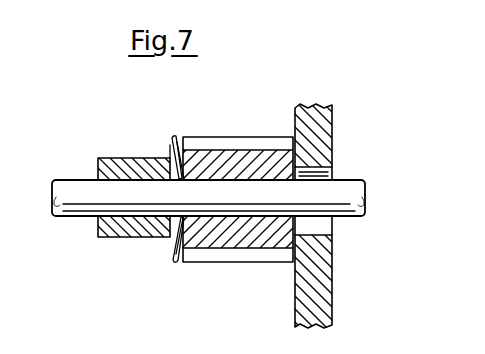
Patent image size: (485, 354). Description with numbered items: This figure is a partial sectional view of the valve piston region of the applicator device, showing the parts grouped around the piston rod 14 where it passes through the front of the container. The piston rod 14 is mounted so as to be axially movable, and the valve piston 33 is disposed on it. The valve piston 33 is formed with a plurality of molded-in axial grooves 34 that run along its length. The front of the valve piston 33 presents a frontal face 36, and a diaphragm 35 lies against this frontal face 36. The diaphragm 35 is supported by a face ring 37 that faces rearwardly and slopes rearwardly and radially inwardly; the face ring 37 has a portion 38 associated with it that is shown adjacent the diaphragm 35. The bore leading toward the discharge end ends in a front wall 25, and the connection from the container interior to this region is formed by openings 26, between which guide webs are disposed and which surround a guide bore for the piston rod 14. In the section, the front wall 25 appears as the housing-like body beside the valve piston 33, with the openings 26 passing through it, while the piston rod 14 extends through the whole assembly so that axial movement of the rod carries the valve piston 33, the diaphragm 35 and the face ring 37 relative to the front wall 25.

The piston rod 14 is at (86, 207).
The front wall 25 is at (323, 276).
The openings 26 is at (330, 178).
The valve piston 33 is at (242, 160).
The axial grooves 34 is at (218, 143).
The diaphragm 35 is at (170, 145).
The frontal face 36 is at (181, 135).
The face ring 37 is at (105, 162).
The face ring portion 38 is at (170, 245).